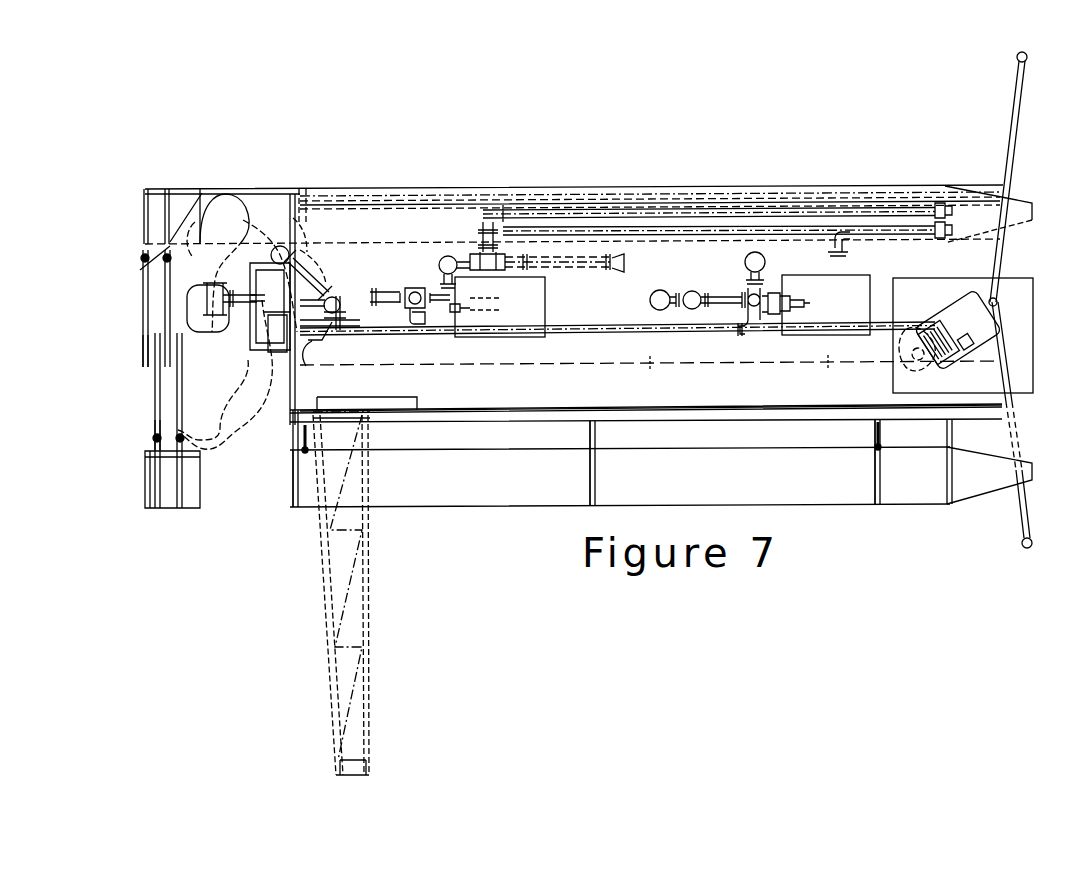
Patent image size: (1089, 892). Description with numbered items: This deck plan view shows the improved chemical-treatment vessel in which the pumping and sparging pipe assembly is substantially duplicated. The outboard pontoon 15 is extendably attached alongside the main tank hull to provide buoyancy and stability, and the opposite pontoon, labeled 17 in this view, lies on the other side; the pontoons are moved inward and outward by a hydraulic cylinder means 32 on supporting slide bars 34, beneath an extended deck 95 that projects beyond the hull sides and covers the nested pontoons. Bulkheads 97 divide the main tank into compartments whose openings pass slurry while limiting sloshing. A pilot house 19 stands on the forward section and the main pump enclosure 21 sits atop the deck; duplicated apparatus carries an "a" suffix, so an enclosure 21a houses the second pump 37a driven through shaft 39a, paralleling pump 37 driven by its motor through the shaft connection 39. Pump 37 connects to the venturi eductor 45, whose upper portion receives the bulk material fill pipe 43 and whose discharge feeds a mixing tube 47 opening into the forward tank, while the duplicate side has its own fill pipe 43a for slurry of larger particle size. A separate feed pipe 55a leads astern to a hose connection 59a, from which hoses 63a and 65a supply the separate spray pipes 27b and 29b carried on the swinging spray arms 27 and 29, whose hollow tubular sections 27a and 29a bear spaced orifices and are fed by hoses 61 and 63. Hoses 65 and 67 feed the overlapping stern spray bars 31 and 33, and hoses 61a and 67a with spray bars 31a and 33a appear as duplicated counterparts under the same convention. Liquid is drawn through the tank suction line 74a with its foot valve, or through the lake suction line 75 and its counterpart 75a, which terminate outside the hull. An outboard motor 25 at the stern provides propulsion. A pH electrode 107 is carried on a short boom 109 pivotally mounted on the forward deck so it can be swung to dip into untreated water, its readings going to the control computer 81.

The outboard pontoon 15 is at (1033, 212).
The lower nose cone 17 is at (1033, 476).
The pilot house 19 is at (1033, 292).
The main pump enclosure 21 is at (543, 316).
The second pump 21a is at (870, 314).
The outboard motor 25 is at (192, 298).
The spray arm 27 is at (372, 630).
The hollow tubular section 27a is at (375, 600).
The spray pipe 27b is at (372, 614).
The spray arm 29 is at (520, 193).
The hollow tubular section 29a is at (570, 196).
The spray pipe 29b is at (630, 198).
The spray bar 31 is at (170, 279).
The support rod lower 31a is at (143, 338).
The hydraulic cylinder means 32 is at (302, 448).
The spray bar 33 is at (182, 376).
The support rod lower 33a is at (157, 421).
The slide bar 34 is at (880, 486).
The pump 37 is at (420, 325).
The pump 37a is at (786, 312).
The shaft connection 39 is at (462, 305).
The shaft 39a is at (806, 303).
The bulk material fill pipe 43 is at (655, 219).
The bulk material fill pipe 43a is at (828, 247).
The venturi eductor 45 is at (497, 258).
The mixing tube 47 is at (575, 259).
The feed pipe 55a is at (605, 336).
The hose connection 59a is at (270, 350).
The hose 61 is at (347, 355).
The valve hose 61a is at (309, 370).
The hose 63 is at (305, 241).
The hose 63a is at (300, 258).
The hose 65 is at (218, 270).
The hose 65a is at (240, 224).
The hose 67 is at (222, 397).
The hose 67a is at (266, 404).
The tank suction line 74a is at (700, 298).
The lake suction line 75 is at (283, 250).
The ball valve 75a is at (662, 291).
The control computer 81 is at (987, 332).
The extended deck 95 is at (708, 397).
The bulkhead 97 is at (650, 362).
The pH electrode 107 is at (1028, 56).
The short boom 109 is at (1012, 160).